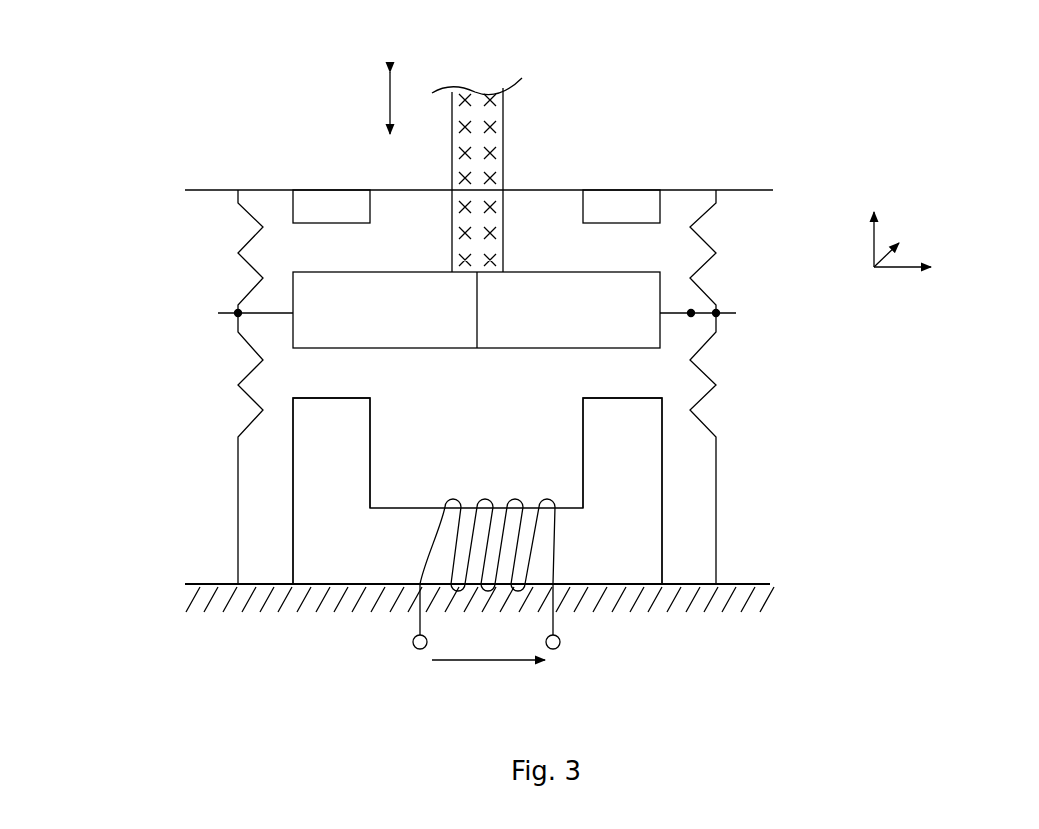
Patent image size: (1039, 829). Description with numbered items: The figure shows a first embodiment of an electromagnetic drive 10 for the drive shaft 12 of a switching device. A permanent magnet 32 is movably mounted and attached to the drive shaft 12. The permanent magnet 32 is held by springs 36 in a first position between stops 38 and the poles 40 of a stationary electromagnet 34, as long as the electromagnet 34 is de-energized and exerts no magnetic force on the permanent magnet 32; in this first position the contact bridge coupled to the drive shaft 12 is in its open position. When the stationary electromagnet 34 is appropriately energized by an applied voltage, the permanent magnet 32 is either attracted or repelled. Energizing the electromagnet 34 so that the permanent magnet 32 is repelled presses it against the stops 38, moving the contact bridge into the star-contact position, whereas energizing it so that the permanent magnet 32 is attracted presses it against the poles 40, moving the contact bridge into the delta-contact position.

The electromagnetic drive 10 is at (880, 423).
The drive shaft 12 is at (500, 139).
The permanent magnet 32 is at (418, 342).
The stationary electromagnet 34 is at (607, 557).
The springs 36 is at (231, 238).
The stops 38 is at (316, 203).
The poles 40 is at (313, 425).